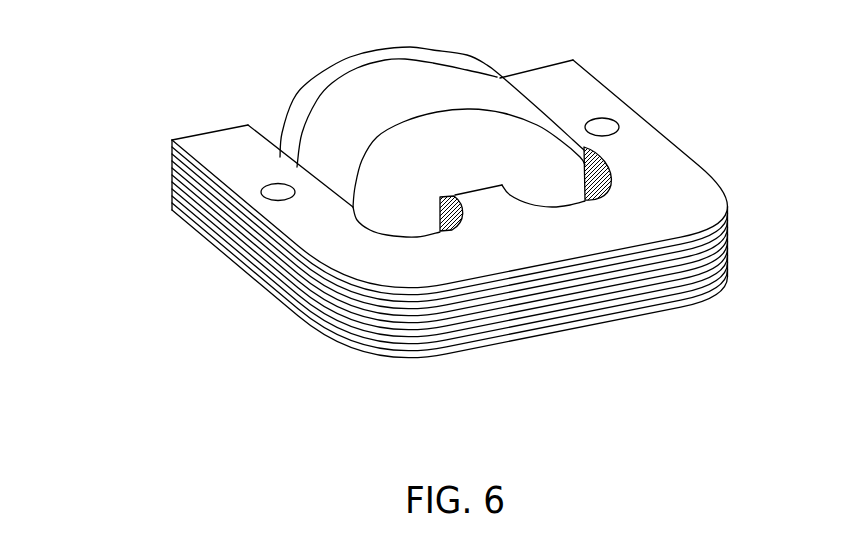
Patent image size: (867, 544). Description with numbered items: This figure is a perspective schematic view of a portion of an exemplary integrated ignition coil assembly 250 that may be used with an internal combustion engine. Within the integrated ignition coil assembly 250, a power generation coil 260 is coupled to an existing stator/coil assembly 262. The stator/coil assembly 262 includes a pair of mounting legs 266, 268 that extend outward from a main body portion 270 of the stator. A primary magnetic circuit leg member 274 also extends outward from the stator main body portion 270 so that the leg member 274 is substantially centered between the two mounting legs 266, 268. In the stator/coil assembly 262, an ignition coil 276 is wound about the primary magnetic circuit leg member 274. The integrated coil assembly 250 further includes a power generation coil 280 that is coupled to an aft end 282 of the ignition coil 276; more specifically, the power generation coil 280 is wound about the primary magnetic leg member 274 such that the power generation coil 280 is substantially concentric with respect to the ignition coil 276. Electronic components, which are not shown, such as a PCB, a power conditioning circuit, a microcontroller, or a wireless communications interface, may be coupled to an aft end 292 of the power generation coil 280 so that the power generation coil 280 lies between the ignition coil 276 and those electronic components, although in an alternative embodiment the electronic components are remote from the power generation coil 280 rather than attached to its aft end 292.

The integrated ignition coil assembly 250 is at (150, 236).
The power generation coil 260 is at (283, 156).
The stator/coil assembly 262 is at (430, 170).
The mounting leg 266 is at (311, 230).
The mounting leg 268 is at (600, 107).
The main body portion 270 is at (487, 192).
The primary magnetic circuit leg member 274 is at (540, 251).
The ignition coil 276 is at (537, 152).
The power generation coil 280 is at (423, 53).
The aft end 282 is at (353, 78).
The aft end 292 is at (302, 92).